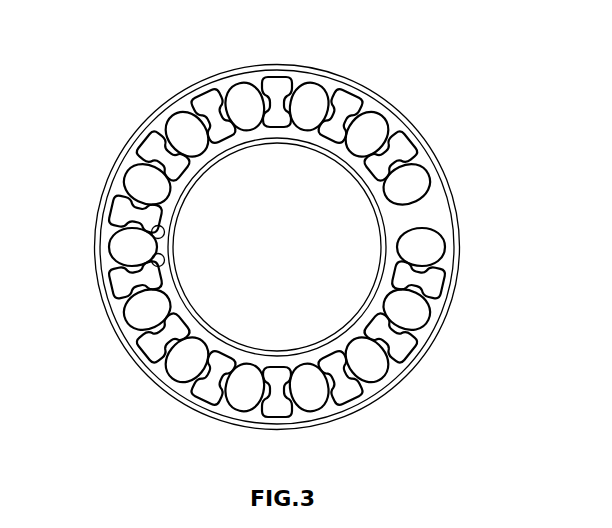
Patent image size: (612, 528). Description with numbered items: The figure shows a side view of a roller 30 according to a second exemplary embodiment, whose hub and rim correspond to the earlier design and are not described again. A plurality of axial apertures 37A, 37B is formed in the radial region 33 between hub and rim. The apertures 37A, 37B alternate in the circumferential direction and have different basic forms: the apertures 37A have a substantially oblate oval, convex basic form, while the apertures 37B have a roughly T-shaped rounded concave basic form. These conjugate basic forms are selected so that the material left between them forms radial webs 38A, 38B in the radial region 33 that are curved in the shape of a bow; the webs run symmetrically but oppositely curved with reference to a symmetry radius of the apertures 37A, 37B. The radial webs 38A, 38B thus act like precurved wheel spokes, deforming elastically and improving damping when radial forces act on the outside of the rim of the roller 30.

The roller 30 is at (190, 82).
The radial region 33 is at (160, 120).
The axial apertures 37A is at (435, 245).
The axial apertures 37B is at (430, 283).
The radial webs 38A is at (360, 102).
The radial webs 38B is at (395, 138).